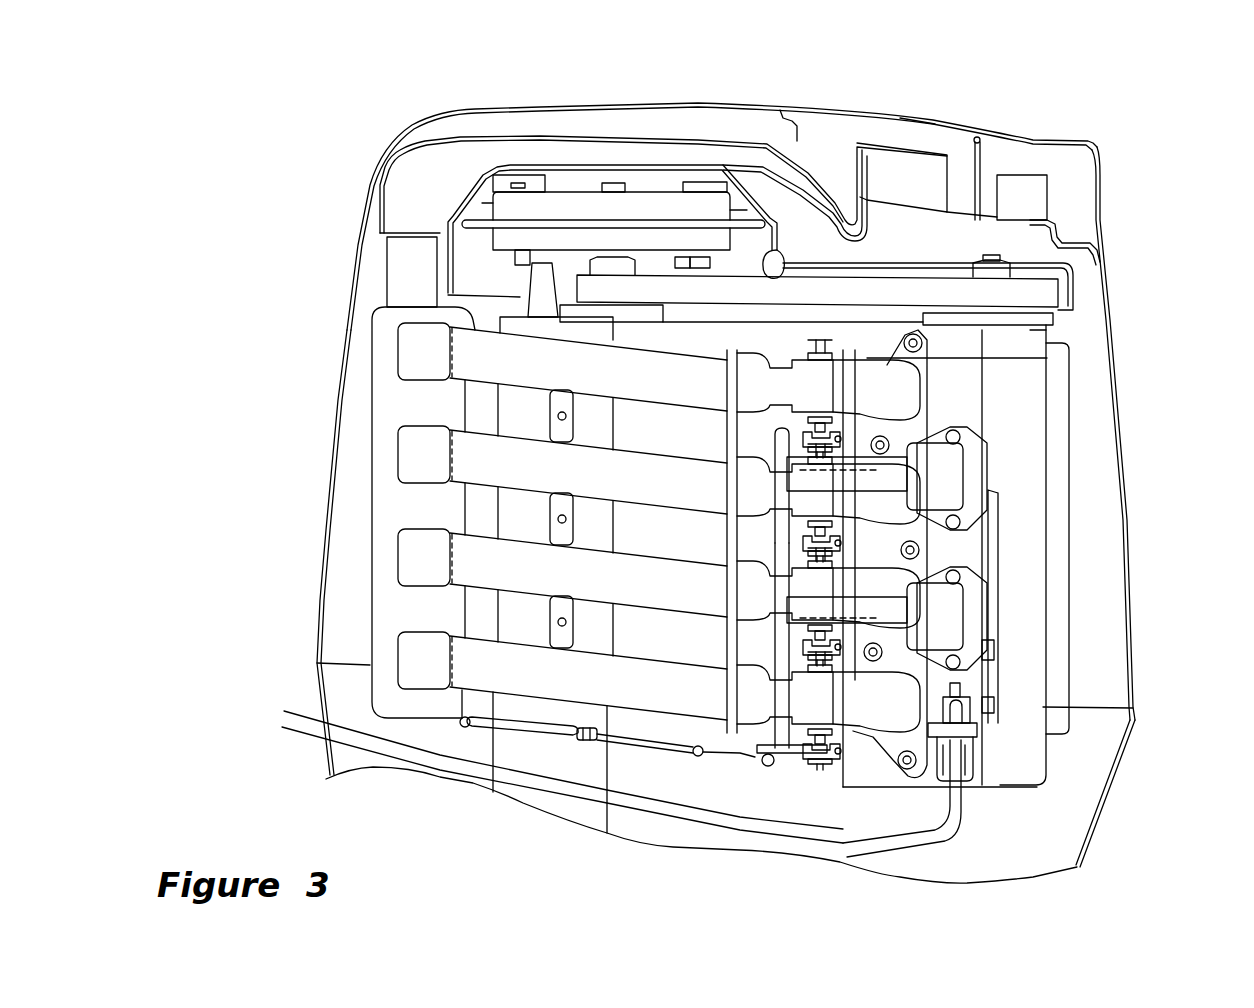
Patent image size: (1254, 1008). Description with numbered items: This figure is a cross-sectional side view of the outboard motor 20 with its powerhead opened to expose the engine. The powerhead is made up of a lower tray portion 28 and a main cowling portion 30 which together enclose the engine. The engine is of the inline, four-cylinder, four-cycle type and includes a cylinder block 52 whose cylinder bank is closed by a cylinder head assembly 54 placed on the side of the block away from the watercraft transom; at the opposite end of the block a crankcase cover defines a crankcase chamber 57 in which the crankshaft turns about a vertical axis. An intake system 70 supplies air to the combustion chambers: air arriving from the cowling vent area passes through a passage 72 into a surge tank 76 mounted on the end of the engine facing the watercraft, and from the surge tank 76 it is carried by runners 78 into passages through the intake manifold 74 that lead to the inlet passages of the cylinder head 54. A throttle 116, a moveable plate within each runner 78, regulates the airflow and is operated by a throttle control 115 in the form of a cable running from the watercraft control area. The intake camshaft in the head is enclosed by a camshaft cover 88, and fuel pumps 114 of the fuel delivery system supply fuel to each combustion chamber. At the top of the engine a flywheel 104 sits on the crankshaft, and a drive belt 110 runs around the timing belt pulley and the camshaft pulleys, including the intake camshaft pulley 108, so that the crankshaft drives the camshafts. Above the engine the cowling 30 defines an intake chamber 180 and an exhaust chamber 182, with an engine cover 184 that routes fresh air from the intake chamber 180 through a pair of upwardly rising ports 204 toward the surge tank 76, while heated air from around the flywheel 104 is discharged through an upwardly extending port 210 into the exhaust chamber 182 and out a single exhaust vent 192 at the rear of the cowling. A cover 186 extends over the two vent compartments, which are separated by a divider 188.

The outboard motor 20 is at (1148, 424).
The lower tray portion 28 is at (1115, 797).
The main cowling portion 30 is at (597, 104).
The cylinder block 52 is at (707, 793).
The cylinder head assembly 54 is at (873, 772).
The crankcase chamber 57 is at (535, 712).
The intake system 70 is at (736, 118).
The passage 72 is at (403, 278).
The intake manifold 74 is at (913, 360).
The surge tank 76 is at (382, 420).
The runners 78 is at (603, 465).
The camshaft cover 88 is at (1030, 683).
The flywheel 104 is at (568, 205).
The intake camshaft pulley 108 is at (1053, 319).
The drive belt 110 is at (857, 293).
The fuel pumps 114 is at (977, 463).
The throttle control 115 is at (630, 748).
The throttle 116 is at (810, 703).
The intake chamber 180 is at (827, 130).
The exhaust chamber 182 is at (1030, 153).
The engine cover 184 is at (647, 138).
The cover 186 is at (933, 120).
The divider 188 is at (972, 150).
The exhaust vent 192 is at (1103, 203).
The ports 204 is at (860, 187).
The port 210 is at (1043, 193).